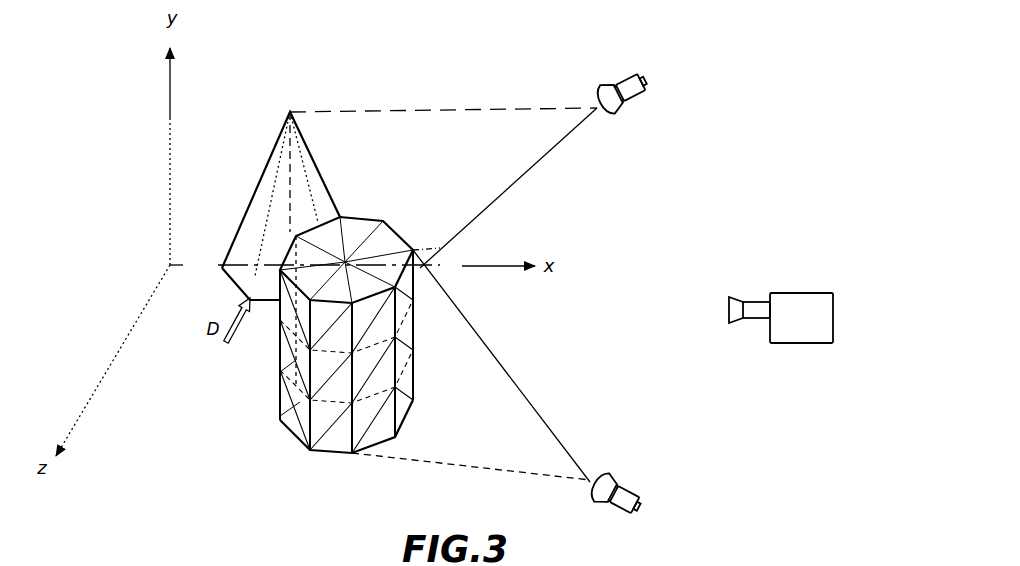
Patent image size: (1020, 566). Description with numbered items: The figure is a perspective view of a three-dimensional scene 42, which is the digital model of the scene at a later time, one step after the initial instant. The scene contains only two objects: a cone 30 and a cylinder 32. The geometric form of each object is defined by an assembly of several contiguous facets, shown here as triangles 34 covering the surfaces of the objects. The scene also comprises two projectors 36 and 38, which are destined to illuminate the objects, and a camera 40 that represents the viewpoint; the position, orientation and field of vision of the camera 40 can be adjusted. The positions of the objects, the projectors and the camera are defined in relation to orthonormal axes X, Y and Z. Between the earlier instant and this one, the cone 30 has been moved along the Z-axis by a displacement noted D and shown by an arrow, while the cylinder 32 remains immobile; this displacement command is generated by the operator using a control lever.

The cone 30 is at (269, 144).
The cylinder 32 is at (402, 223).
The triangles 34 is at (246, 243).
The projector 36 is at (632, 497).
The projector 38 is at (641, 107).
The camera 40 is at (801, 340).
The scene 42 is at (222, 437).